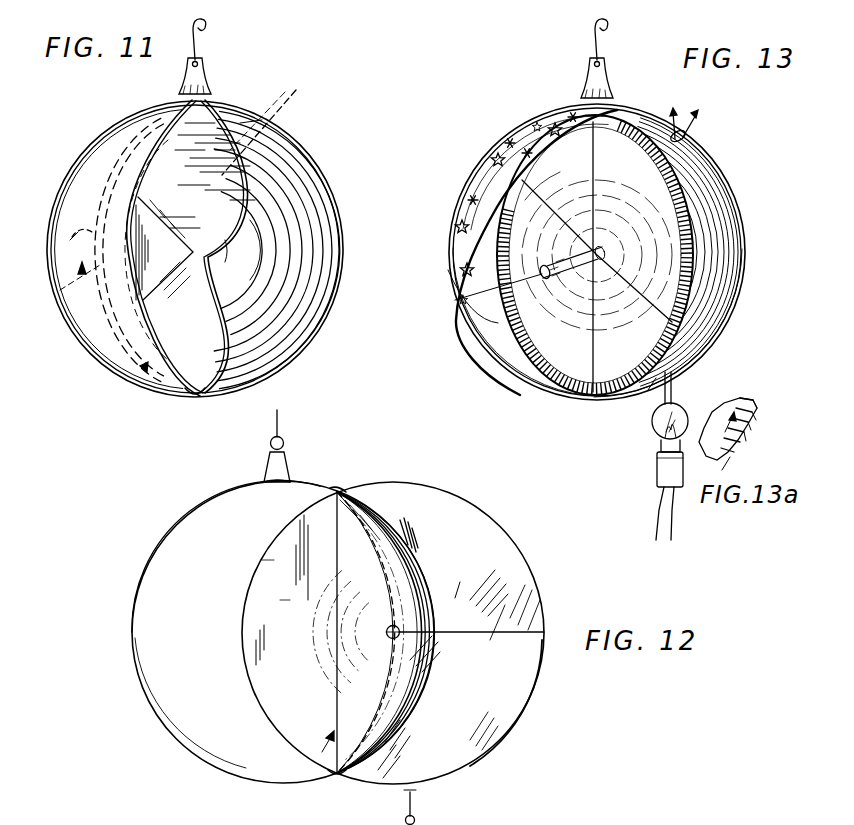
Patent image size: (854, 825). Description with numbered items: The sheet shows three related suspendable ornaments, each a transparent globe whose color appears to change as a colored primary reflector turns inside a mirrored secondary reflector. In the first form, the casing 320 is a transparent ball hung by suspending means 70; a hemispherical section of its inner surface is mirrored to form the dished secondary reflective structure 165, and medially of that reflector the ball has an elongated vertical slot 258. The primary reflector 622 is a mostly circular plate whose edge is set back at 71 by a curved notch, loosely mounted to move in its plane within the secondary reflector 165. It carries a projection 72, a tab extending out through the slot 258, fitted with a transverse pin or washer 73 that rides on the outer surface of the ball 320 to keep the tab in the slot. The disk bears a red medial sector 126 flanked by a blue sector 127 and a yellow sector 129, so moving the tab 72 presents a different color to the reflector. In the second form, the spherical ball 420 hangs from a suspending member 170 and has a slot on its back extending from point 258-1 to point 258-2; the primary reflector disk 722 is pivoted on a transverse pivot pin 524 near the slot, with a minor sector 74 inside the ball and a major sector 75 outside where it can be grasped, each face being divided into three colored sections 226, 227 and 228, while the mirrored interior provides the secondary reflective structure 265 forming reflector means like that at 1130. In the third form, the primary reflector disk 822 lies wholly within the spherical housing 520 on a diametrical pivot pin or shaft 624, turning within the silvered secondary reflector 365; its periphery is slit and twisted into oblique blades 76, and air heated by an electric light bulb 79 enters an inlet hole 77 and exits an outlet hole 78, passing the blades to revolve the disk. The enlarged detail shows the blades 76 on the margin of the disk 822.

In FIG. 11, the suspending means 70 is at (204, 68).
In FIG. 13, the suspending means 70 is at (608, 73).
In FIG. 12, the suspending means 70 is at (438, 819).
In FIG. 11, the secondary reflective structure 165 is at (214, 103).
In FIG. 11, the flanking sector 127 is at (278, 122).
In FIG. 11, the primary reflector 622 is at (266, 152).
In FIG. 11, the casing 320 is at (307, 149).
In FIG. 11, the set-back edge 71 is at (207, 257).
In FIG. 11, the transverse pin or washer 73 is at (90, 170).
In FIG. 11, the projection 72 is at (72, 237).
In FIG. 11, the medial sector 126 is at (193, 252).
In FIG. 11, the vertical slot 258 is at (112, 360).
In FIG. 12, the vertical slot 258 is at (394, 532).
In FIG. 11, the end sector 129 is at (197, 387).
In FIG. 13, the outlet hole 78 is at (689, 112).
In FIG. 13, the primary reflector disk 822 is at (600, 252).
In FIG. 13A, the primary reflector disk 822 is at (733, 398).
In FIG. 13, the spherical housing 520 is at (748, 216).
In FIG. 13, the secondary reflector 365 is at (456, 292).
In FIG. 13, the pivot pin or shaft 624 is at (498, 323).
In FIG. 13, the oblique blades 76 is at (552, 394).
In FIG. 13A, the oblique blades 76 is at (750, 400).
In FIG. 13, the inlet hole 77 is at (648, 390).
In FIG. 13, the electric light bulb 79 is at (682, 404).
In FIG. 12, the suspending member 170 is at (288, 463).
In FIG. 12, the spherical ball 420 is at (170, 528).
In FIG. 12, the slot end point 258-1 is at (341, 490).
In FIG. 12, the primary reflector disk 722 is at (515, 537).
In FIG. 12, the disk section 227 is at (454, 552).
In FIG. 12, the transverse pivot pin 524 is at (399, 630).
In FIG. 12, the disk section 226 is at (308, 657).
In FIG. 12, the disk section 228 is at (477, 696).
In FIG. 12, the major sector 75 is at (540, 693).
In FIG. 12, the minor sector 74 is at (250, 683).
In FIG. 12, the reflector means 1130 is at (348, 685).
In FIG. 12, the secondary reflective structure 265 is at (322, 752).
In FIG. 12, the slot end point 258-2 is at (338, 776).